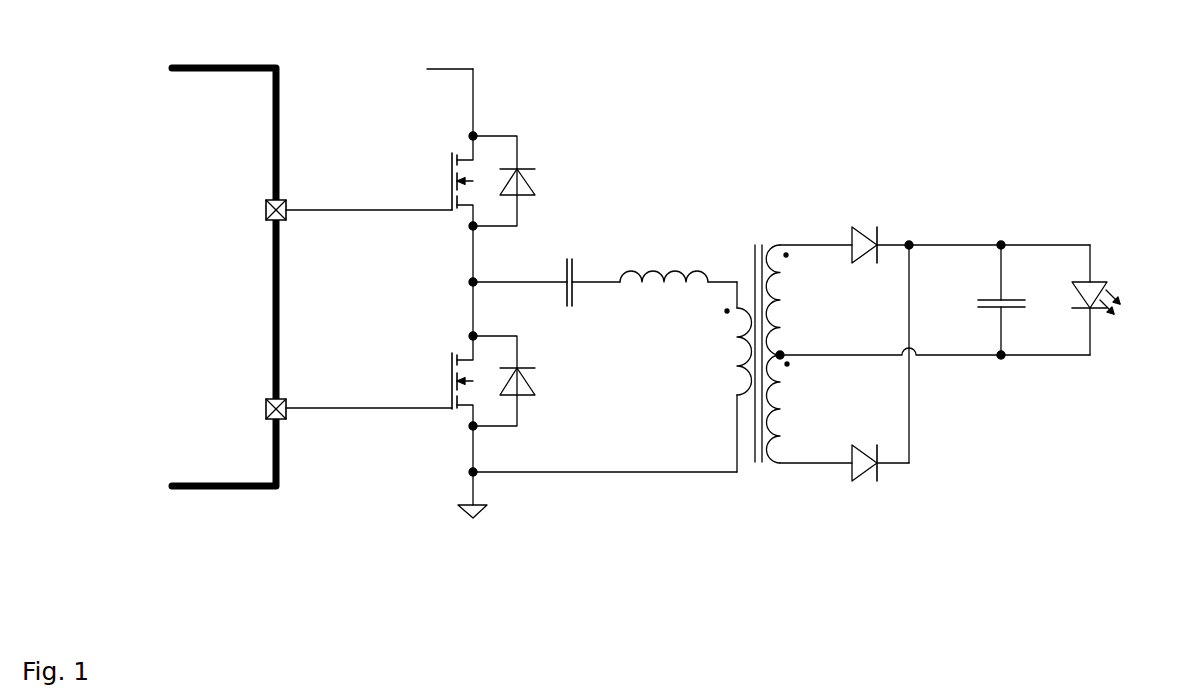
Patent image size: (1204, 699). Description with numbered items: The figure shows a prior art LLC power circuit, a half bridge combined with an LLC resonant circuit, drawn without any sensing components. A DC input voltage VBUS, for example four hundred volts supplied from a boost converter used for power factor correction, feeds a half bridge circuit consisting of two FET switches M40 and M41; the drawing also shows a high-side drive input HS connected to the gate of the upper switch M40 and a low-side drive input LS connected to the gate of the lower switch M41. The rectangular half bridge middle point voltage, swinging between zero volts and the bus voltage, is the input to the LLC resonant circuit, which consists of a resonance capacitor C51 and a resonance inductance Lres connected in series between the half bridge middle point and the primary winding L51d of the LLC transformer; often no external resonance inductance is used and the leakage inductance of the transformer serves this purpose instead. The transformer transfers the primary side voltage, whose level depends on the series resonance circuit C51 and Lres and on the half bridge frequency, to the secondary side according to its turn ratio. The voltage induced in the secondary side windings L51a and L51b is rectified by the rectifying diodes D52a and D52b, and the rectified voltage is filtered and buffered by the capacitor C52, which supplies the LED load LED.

The high-side gate drive input HS is at (359, 206).
The low-side gate drive input LS is at (359, 402).
The DC input voltage VBUS is at (441, 83).
The switch M40 is at (461, 181).
The switch M41 is at (461, 381).
The resonance capacitor C51 is at (546, 267).
The resonance inductance Lres is at (678, 257).
The transformer primary winding L51d is at (721, 358).
The secondary side winding L51a is at (809, 302).
The secondary side winding L51b is at (810, 409).
The rectifying diode D52a is at (965, 230).
The rectifying diode D52b is at (873, 388).
The capacitor C52 is at (984, 300).
The LED load LED is at (1121, 300).